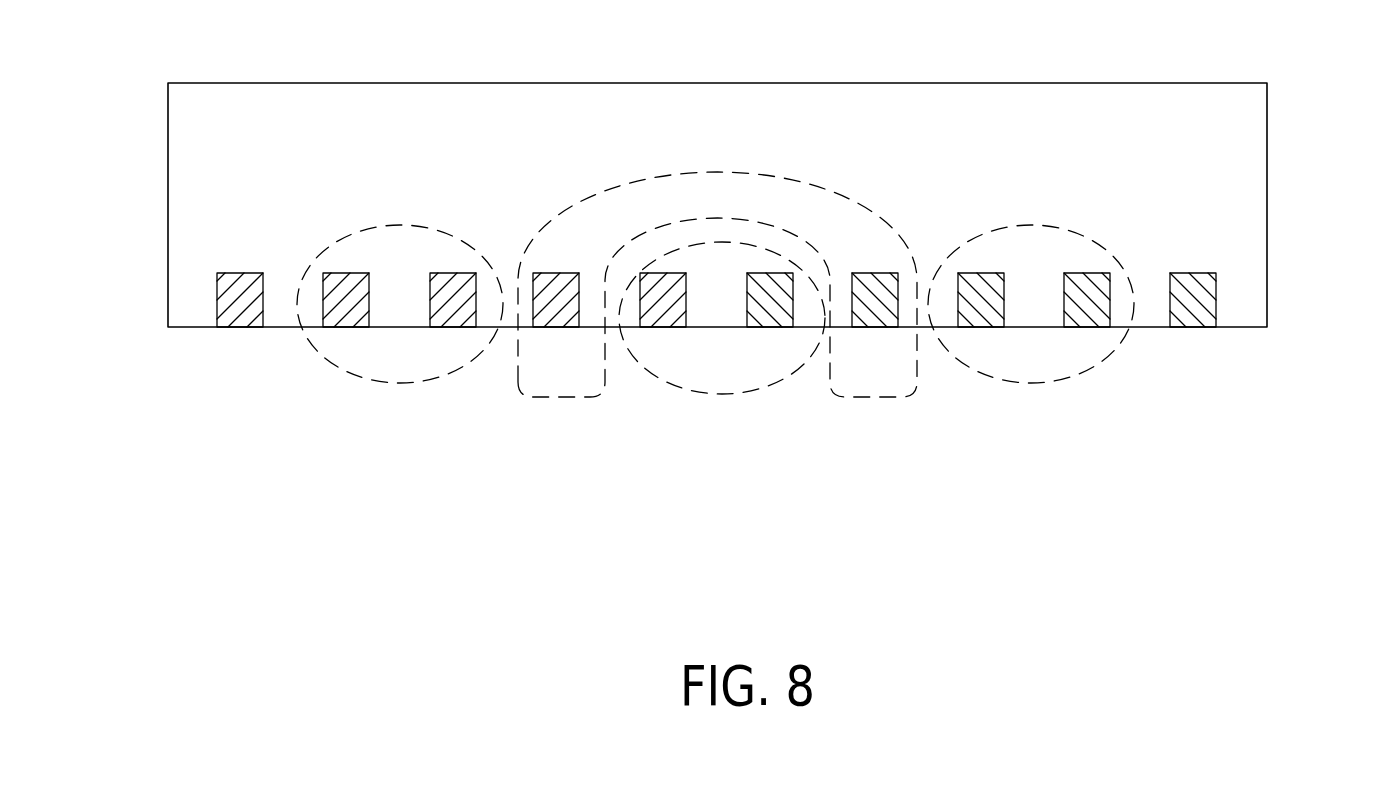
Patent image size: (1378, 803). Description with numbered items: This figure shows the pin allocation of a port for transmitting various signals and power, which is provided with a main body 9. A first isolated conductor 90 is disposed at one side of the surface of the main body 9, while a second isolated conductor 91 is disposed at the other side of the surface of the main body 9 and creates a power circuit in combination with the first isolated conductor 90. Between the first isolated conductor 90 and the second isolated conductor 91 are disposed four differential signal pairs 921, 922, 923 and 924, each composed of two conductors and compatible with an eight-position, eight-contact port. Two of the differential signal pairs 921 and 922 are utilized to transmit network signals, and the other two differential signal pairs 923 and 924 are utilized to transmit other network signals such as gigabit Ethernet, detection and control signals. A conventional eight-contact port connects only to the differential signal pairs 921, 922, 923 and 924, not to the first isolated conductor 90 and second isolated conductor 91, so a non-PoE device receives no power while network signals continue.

The main body 9 is at (1277, 152).
The first isolated conductor 90 is at (217, 300).
The second isolated conductor 91 is at (1216, 305).
The differential signal pair 921 is at (351, 373).
The differential signal pair 922 is at (538, 400).
The differential signal pair 923 is at (693, 397).
The differential signal pair 924 is at (1005, 380).